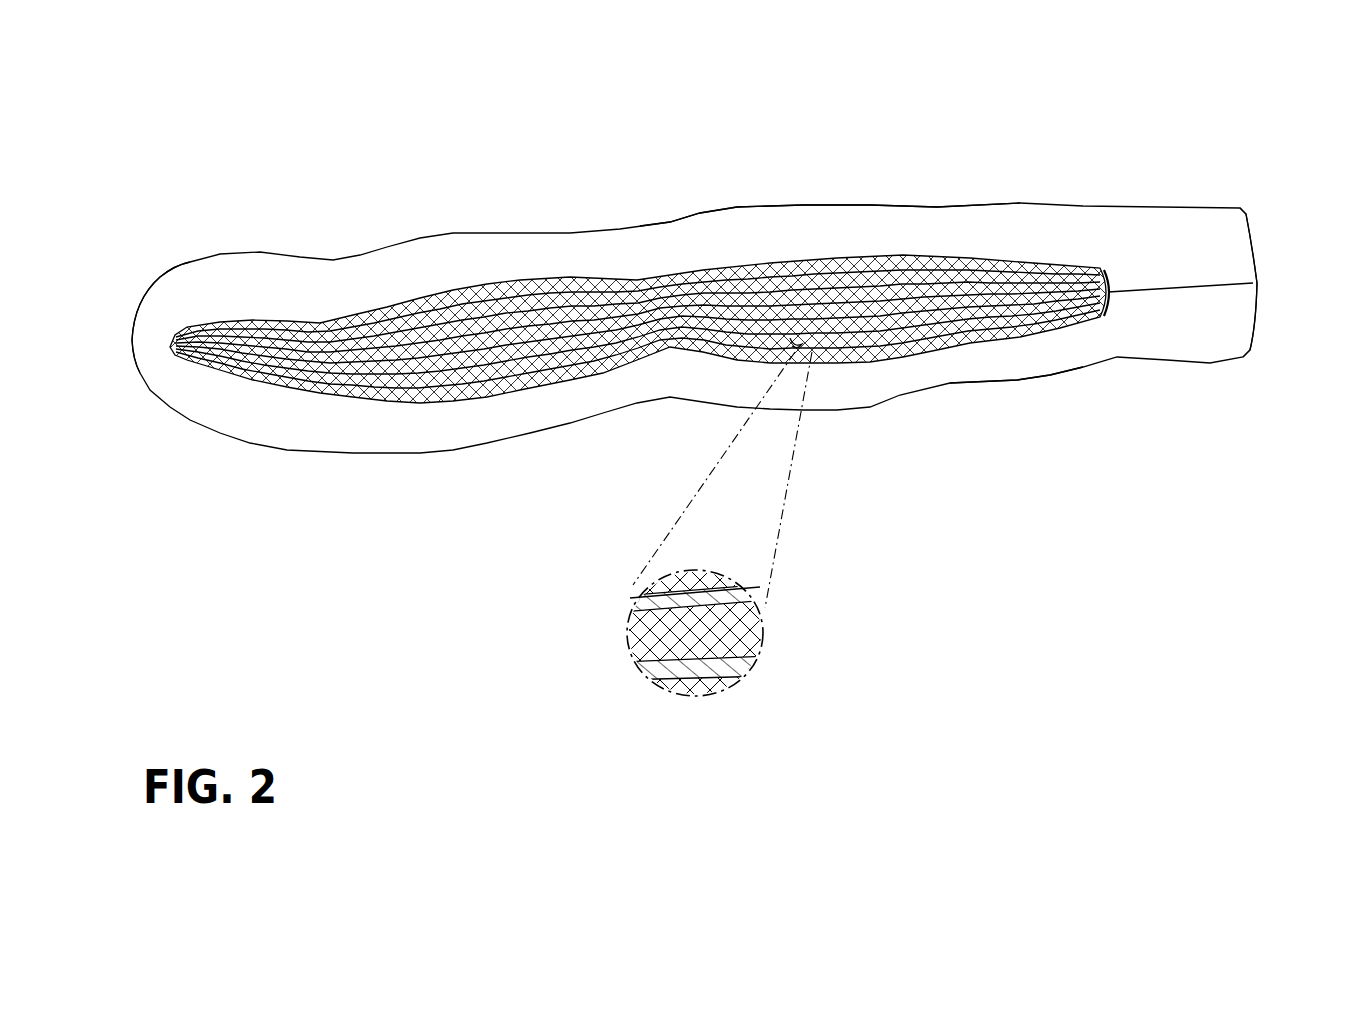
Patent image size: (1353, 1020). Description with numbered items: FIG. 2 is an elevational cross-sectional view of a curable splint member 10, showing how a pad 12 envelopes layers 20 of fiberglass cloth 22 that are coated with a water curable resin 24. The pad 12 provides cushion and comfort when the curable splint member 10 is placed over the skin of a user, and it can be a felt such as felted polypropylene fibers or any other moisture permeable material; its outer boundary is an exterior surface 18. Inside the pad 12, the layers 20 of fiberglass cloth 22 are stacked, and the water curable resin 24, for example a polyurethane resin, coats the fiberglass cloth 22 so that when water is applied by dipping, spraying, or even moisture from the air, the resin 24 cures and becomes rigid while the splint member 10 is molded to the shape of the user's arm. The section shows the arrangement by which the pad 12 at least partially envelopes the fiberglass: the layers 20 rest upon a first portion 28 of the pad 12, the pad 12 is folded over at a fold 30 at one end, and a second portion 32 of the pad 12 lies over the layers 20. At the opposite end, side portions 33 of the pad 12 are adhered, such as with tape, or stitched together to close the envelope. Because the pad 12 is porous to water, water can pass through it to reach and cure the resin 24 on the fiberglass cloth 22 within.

The curable splint member 10 is at (336, 170).
The pad 12 is at (573, 222).
The exterior surface 18 is at (765, 203).
The layers of fiberglass cloth 20 is at (1077, 273).
The fiberglass cloth 22 is at (1117, 300).
The water curable resin 24 is at (640, 598).
The first portion 28 is at (1003, 367).
The fold 30 is at (155, 342).
The second portion 32 is at (933, 220).
The side portions 33 is at (1240, 313).